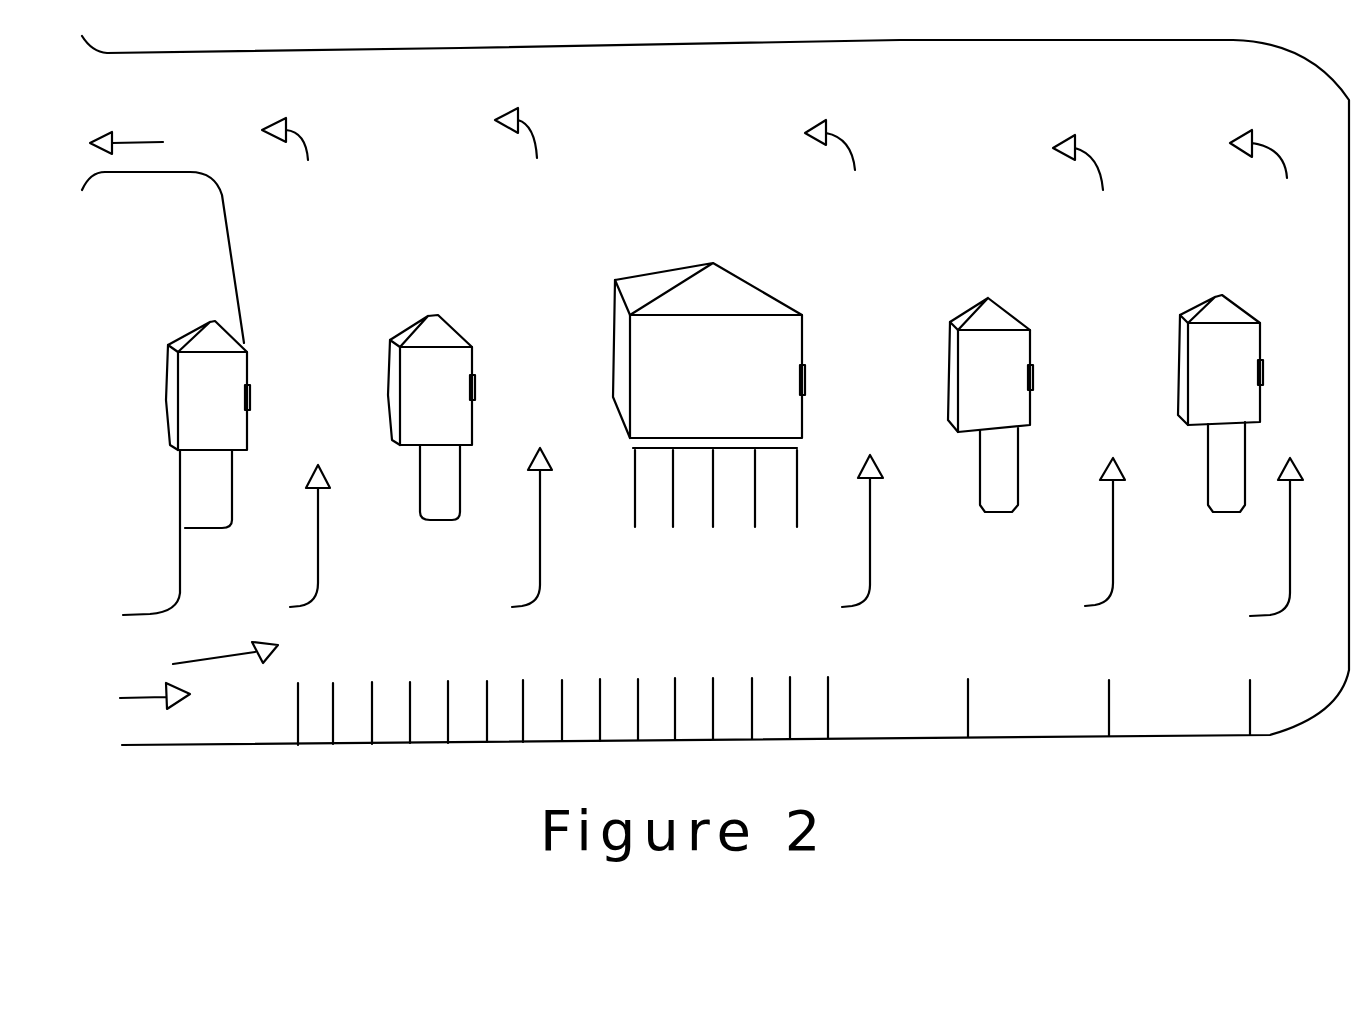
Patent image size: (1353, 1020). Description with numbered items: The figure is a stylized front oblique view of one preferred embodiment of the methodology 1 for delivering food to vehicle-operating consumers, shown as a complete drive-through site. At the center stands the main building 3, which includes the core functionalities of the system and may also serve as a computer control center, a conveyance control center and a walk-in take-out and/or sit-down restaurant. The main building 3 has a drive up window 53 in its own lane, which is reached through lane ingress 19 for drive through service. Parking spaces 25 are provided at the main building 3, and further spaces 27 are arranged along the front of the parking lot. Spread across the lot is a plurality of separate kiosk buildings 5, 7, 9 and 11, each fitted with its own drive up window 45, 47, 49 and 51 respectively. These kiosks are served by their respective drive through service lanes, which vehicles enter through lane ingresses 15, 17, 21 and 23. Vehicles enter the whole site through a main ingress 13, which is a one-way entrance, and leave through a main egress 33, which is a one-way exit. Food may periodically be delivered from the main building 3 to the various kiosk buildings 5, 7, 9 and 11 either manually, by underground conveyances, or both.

The methodology 1 is at (662, 68).
The main building 3 is at (658, 285).
The kiosk building 5 is at (230, 370).
The kiosk building 7 is at (445, 360).
The kiosk building 9 is at (968, 340).
The kiosk building 11 is at (1220, 335).
The main ingress 13 is at (168, 653).
The lane ingress 15 is at (366, 495).
The lane ingress 17 is at (583, 502).
The lane ingress 19 is at (923, 493).
The lane ingress 21 is at (1166, 495).
The lane ingress 23 is at (1340, 493).
The parking spaces 25 is at (633, 508).
The spaces 27 is at (832, 695).
The main egress 33 is at (152, 98).
The drive up window 45 is at (252, 395).
The drive up window 47 is at (478, 388).
The drive up window 49 is at (1037, 372).
The drive up window 51 is at (1265, 368).
The drive up window 53 is at (808, 370).